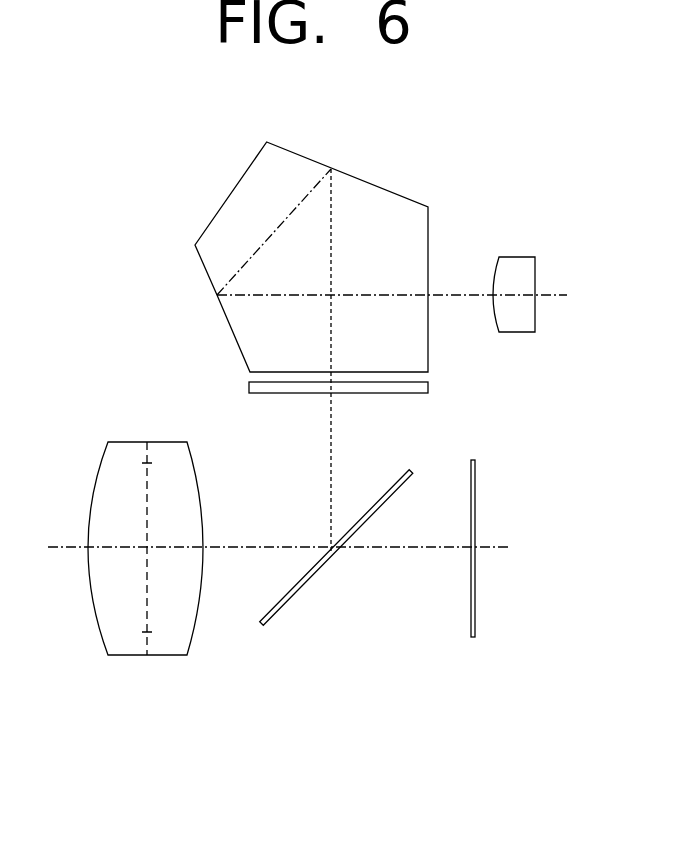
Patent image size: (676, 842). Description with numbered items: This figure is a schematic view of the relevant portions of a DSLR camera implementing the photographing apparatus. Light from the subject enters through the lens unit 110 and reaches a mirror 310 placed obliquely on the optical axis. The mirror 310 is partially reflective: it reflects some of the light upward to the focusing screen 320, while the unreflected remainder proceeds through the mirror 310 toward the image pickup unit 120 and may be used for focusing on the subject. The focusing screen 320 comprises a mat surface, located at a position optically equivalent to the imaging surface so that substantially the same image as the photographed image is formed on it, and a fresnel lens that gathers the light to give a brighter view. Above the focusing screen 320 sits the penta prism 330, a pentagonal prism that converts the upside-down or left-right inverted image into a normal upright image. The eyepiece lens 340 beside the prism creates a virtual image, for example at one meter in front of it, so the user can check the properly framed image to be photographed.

The lens unit 110 is at (127, 655).
The image pickup unit 120 is at (476, 472).
The mirror 310 is at (410, 468).
The focusing screen 320 is at (430, 385).
The penta prism 330 is at (287, 150).
The eyepiece lens 340 is at (517, 257).